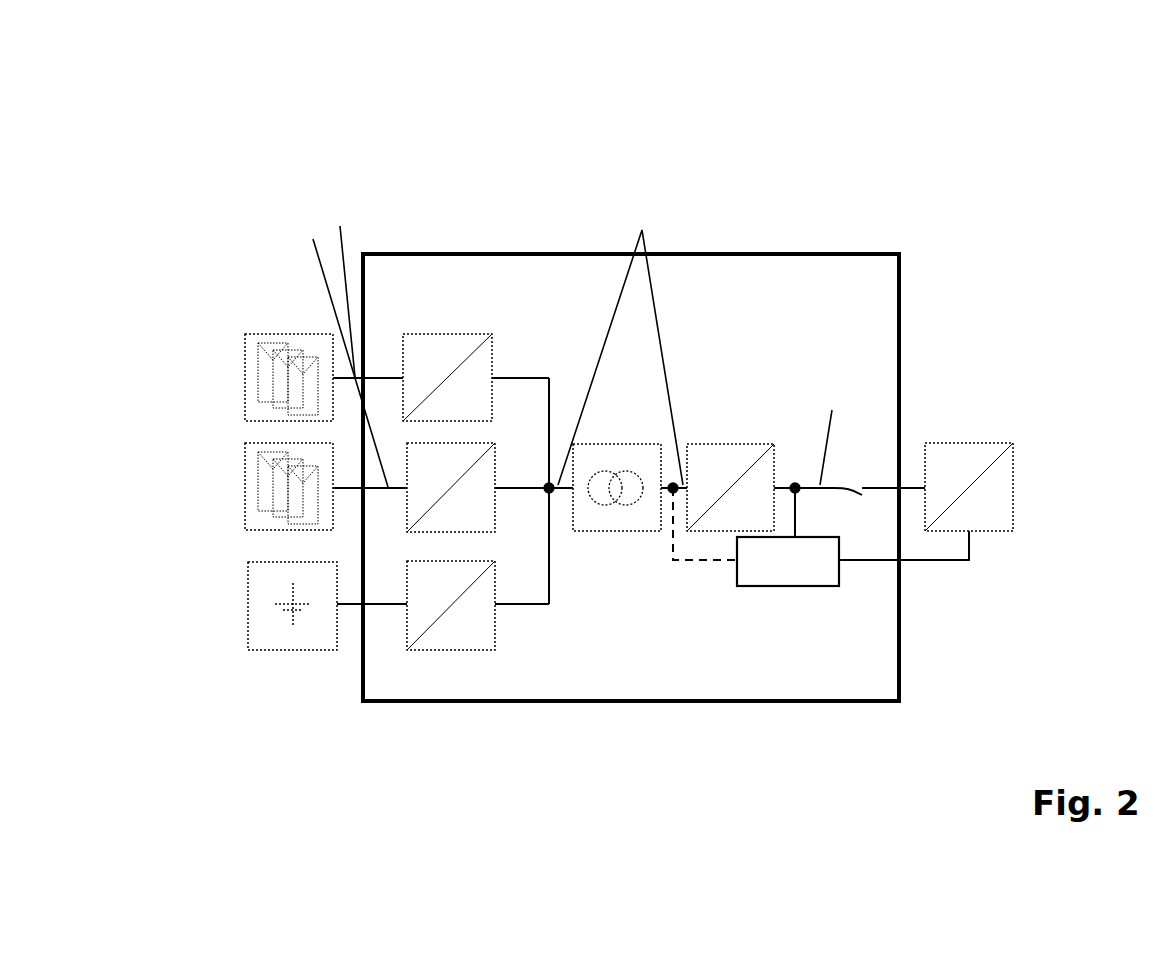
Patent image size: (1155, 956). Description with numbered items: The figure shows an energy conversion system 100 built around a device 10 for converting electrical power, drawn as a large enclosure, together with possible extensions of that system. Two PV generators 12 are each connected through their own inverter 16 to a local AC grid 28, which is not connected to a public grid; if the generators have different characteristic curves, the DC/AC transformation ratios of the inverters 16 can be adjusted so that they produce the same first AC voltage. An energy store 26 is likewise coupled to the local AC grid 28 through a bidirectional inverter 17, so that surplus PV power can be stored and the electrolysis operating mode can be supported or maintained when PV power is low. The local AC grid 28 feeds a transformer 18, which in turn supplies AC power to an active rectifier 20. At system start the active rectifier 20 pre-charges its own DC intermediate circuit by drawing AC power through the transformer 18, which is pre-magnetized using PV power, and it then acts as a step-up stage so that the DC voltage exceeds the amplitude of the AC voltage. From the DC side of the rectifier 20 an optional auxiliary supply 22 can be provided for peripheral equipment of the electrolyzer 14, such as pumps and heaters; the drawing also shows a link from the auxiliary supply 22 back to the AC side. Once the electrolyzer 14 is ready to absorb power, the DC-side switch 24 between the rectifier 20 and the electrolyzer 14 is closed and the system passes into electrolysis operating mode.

The energy conversion system 100 is at (963, 173).
The device for converting electrical power 10 is at (879, 298).
The PV generator 12 is at (245, 383).
The electrolyzer 14 is at (953, 443).
The inverter 16 is at (459, 331).
The bidirectional inverter 17 is at (487, 558).
The transformer 18 is at (588, 442).
The active rectifier 20 is at (713, 442).
The auxiliary supply 22 is at (805, 579).
The DC-side switch 24 is at (855, 485).
The energy store 26 is at (248, 603).
The local AC grid 28 is at (551, 377).